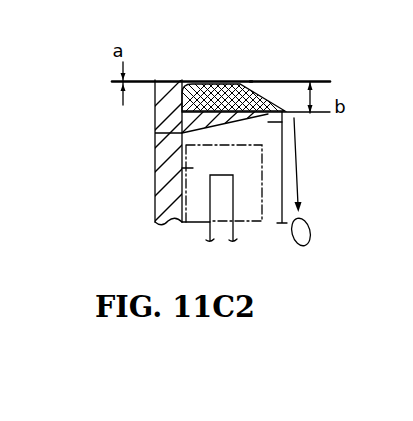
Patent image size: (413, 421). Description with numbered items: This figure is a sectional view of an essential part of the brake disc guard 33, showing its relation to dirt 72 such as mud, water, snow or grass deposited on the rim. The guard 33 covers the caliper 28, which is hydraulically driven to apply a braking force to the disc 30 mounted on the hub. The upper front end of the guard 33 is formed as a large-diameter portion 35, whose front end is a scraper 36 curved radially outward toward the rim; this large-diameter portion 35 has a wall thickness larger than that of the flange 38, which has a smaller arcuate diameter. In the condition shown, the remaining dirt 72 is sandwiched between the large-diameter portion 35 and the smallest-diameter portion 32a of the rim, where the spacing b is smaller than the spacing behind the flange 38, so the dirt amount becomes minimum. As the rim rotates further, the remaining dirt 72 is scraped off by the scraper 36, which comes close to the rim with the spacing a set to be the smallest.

The scraper 36 is at (173, 80).
The smallest-diameter portion 32a is at (295, 80).
The brake disc guard 33 is at (153, 149).
The disc 30 is at (172, 207).
The large-diameter portion 35 is at (252, 120).
The dirt 72 is at (252, 88).
The flange 38 is at (278, 221).
The caliper 28 is at (152, 173).